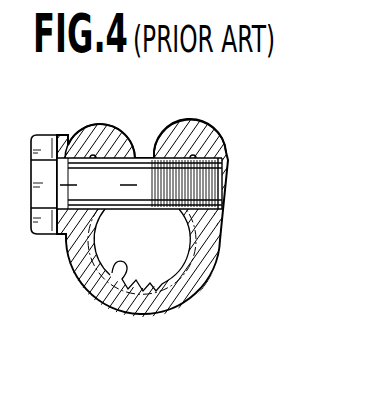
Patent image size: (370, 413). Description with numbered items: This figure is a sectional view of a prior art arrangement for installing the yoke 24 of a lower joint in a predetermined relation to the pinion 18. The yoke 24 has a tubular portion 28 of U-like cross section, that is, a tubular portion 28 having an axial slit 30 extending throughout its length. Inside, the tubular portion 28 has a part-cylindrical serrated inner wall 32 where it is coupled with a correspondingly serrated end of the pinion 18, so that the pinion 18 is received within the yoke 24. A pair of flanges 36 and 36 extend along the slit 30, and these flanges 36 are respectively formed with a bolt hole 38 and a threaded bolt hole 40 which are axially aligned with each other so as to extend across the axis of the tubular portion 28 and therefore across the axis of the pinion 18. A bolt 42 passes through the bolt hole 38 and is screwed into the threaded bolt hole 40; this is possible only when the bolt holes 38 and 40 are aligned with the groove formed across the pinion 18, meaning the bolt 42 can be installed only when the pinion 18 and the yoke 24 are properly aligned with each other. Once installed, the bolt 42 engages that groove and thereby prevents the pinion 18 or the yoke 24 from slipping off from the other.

The pinion 18 is at (153, 251).
The yoke 24 is at (161, 326).
The tubular portion 28 is at (198, 289).
The axial slit 30 is at (144, 157).
The serrated inner wall 32 is at (98, 293).
The flanges 36 is at (95, 135).
The bolt hole 38 is at (74, 160).
The threaded bolt hole 40 is at (204, 168).
The bolt 42 is at (109, 194).